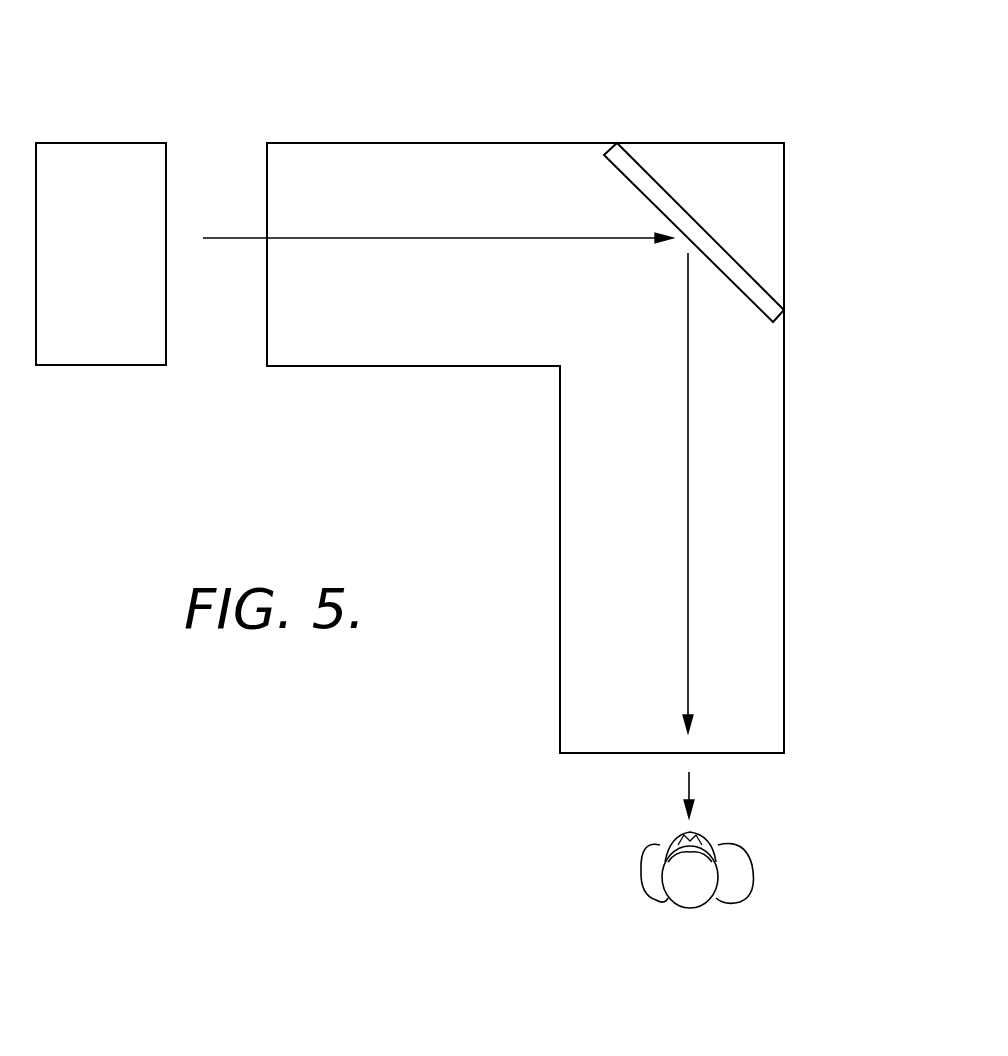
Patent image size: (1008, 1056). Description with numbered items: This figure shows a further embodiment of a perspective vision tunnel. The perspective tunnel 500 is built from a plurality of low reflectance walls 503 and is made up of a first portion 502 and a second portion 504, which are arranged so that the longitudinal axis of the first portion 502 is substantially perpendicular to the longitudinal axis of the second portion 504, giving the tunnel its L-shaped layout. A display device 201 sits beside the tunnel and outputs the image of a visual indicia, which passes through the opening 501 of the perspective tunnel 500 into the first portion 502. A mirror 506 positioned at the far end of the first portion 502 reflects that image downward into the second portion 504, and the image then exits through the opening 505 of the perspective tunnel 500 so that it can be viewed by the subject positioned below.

The perspective tunnel 500 is at (240, 50).
The display device 201 is at (94, 143).
The opening 501 is at (267, 157).
The first portion 502 is at (494, 143).
The low reflectance walls 503 is at (420, 367).
The second portion 504 is at (784, 483).
The opening 505 is at (758, 755).
The mirror 506 is at (740, 268).